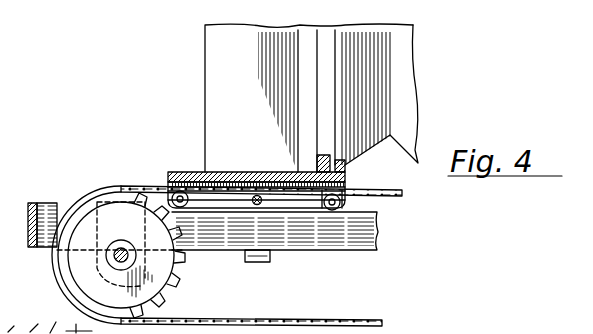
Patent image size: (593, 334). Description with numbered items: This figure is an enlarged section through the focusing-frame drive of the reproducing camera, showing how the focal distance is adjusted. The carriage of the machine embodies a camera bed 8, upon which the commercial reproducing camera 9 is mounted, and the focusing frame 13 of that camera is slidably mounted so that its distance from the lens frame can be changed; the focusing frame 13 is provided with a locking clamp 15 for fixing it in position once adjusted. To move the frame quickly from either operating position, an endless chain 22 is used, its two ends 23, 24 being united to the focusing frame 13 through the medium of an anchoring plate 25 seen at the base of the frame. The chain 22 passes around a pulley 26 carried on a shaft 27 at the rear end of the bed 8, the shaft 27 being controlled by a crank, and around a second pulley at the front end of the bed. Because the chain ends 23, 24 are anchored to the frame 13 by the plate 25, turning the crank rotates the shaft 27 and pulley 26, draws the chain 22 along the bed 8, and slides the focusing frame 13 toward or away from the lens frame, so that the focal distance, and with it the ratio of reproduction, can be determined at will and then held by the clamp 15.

The camera bed 8 is at (322, 244).
The commercial reproducing camera 9 is at (416, 80).
The focusing frame 13 is at (199, 52).
The locking clamp 15 is at (257, 195).
The endless chain 22 is at (141, 188).
The chain end 23 is at (278, 190).
The chain end 24 is at (233, 192).
The anchoring plate 25 is at (242, 190).
The pulley 26 is at (175, 268).
The shaft 27 is at (124, 247).